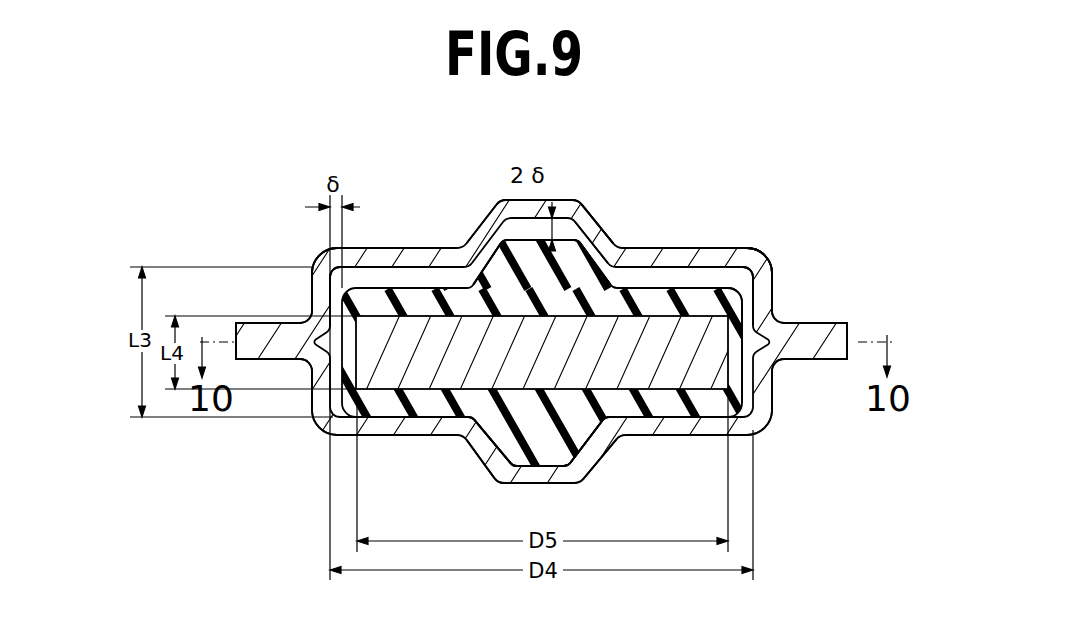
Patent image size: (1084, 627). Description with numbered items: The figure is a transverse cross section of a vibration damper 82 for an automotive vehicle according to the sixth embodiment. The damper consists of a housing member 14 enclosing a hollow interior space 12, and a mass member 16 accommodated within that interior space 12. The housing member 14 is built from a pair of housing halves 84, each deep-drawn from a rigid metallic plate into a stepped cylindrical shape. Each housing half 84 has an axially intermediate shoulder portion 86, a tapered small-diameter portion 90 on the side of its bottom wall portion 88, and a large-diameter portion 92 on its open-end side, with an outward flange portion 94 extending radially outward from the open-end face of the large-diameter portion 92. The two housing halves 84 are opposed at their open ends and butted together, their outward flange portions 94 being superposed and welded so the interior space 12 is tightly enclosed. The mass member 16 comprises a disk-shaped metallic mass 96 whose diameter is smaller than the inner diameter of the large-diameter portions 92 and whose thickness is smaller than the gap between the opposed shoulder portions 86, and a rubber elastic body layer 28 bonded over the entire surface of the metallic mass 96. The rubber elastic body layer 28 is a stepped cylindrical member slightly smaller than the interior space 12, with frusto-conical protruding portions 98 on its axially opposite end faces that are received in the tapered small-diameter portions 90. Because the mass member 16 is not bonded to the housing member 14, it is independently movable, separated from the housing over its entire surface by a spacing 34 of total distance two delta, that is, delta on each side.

The interior space 12 is at (690, 276).
The housing member 14 is at (310, 255).
The mass member 16 is at (645, 286).
The rubber elastic body layer 28 is at (611, 218).
The spacing 34 is at (771, 267).
The vibration damper 82 is at (762, 200).
The housing half 84 is at (765, 250).
The shoulder portion 86 is at (435, 252).
The bottom wall portion 88 is at (582, 214).
The tapered small-diameter portion 90 is at (482, 234).
The large-diameter portion 92 is at (318, 282).
The outward flange portion 94 is at (818, 330).
The metallic mass 96 is at (384, 328).
The protruding portion 98 is at (517, 246).